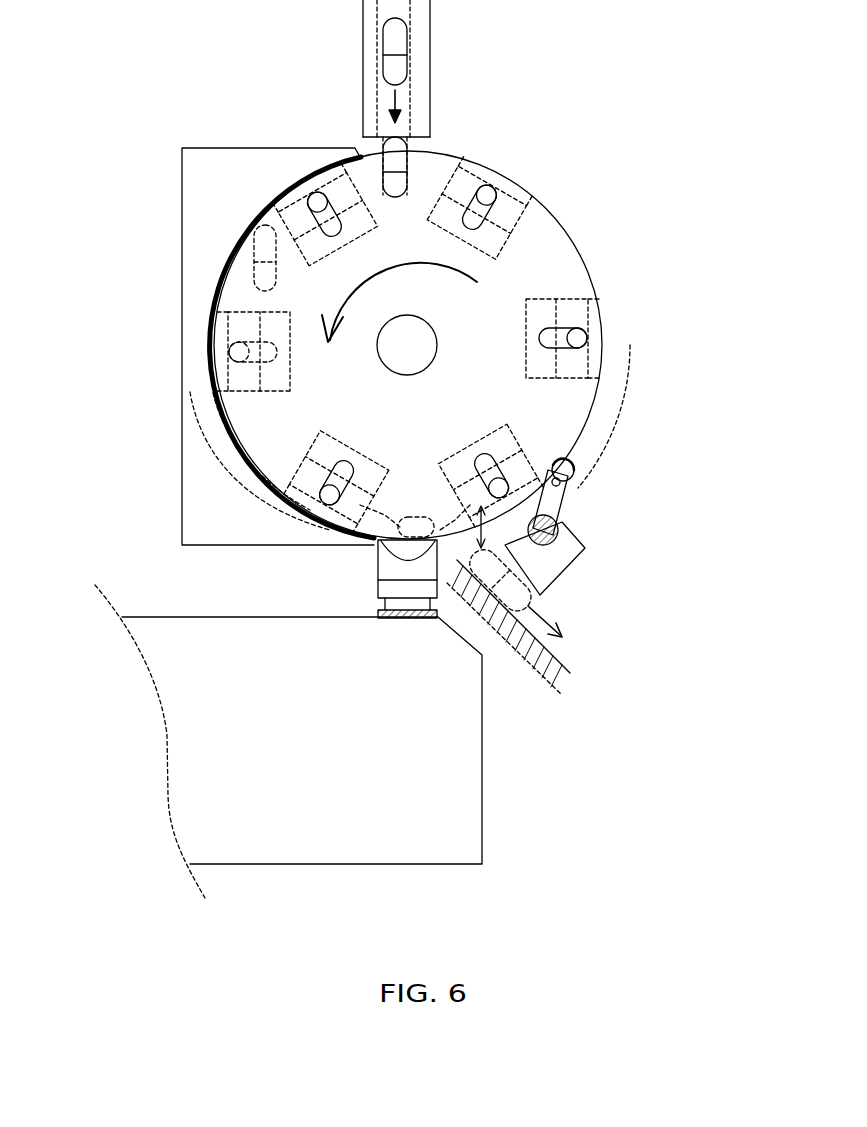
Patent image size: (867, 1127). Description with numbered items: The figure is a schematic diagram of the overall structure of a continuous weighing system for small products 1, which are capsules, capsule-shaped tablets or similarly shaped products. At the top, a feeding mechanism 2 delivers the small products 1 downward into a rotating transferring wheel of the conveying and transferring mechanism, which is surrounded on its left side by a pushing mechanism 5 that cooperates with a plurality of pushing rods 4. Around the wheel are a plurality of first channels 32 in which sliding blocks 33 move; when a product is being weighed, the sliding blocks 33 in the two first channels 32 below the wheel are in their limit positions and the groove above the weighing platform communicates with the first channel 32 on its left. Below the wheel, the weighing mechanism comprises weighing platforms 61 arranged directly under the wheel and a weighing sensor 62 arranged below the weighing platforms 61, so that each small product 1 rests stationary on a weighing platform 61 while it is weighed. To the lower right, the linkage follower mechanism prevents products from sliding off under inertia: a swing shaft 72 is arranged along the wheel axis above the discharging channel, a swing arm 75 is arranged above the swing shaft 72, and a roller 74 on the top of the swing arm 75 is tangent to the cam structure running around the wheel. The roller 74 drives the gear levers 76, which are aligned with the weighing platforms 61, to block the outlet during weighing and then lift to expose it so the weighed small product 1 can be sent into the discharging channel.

The small products 1 is at (393, 65).
The feeding mechanism 2 is at (430, 120).
The pushing rods 4 is at (480, 198).
The first channels 32 is at (503, 250).
The sliding blocks 33 is at (572, 310).
The pushing mechanism 5 is at (215, 453).
The gear levers 76 is at (420, 527).
The roller 74 is at (563, 463).
The swing arm 75 is at (565, 503).
The swing shaft 72 is at (570, 532).
The weighing platforms 61 is at (410, 594).
The weighing sensor 62 is at (415, 757).